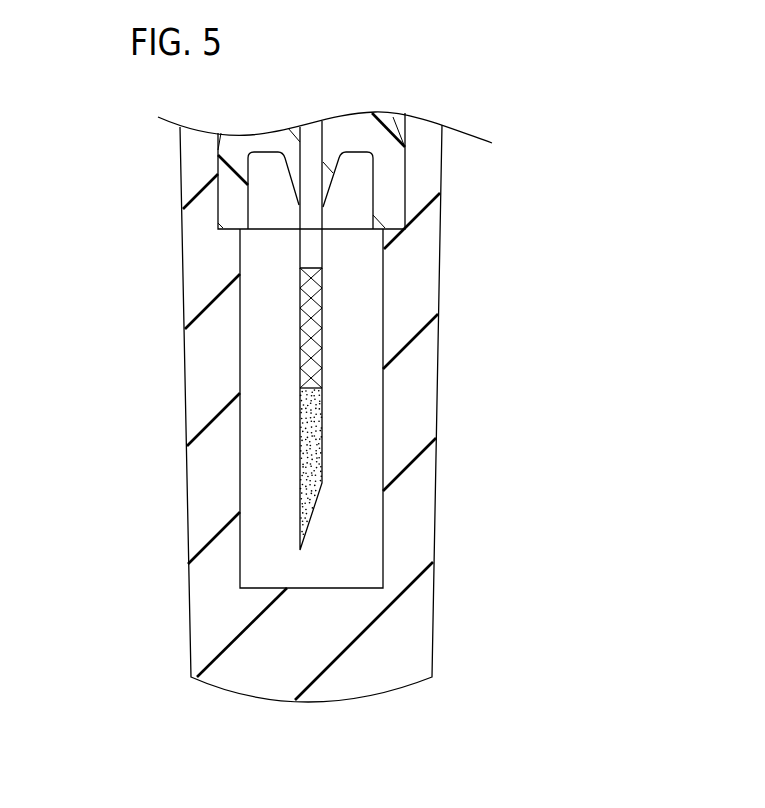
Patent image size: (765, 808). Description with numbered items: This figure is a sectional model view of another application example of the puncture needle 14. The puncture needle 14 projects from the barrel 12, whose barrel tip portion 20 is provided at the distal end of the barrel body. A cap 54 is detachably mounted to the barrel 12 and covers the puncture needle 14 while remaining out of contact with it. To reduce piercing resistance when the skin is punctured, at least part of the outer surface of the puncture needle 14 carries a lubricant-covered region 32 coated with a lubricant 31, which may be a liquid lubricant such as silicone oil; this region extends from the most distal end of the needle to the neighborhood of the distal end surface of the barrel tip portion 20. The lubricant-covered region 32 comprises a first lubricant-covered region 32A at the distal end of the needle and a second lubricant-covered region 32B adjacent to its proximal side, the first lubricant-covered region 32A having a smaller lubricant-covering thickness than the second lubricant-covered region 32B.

The barrel 12 is at (385, 171).
The barrel tip portion 20 is at (408, 183).
The puncture needle 14 is at (326, 257).
The lubricant 31 is at (299, 307).
The lubricant-covered region 32 is at (424, 401).
The first lubricant-covered region 32A is at (325, 445).
The second lubricant-covered region 32B is at (324, 354).
The cap 54 is at (182, 304).